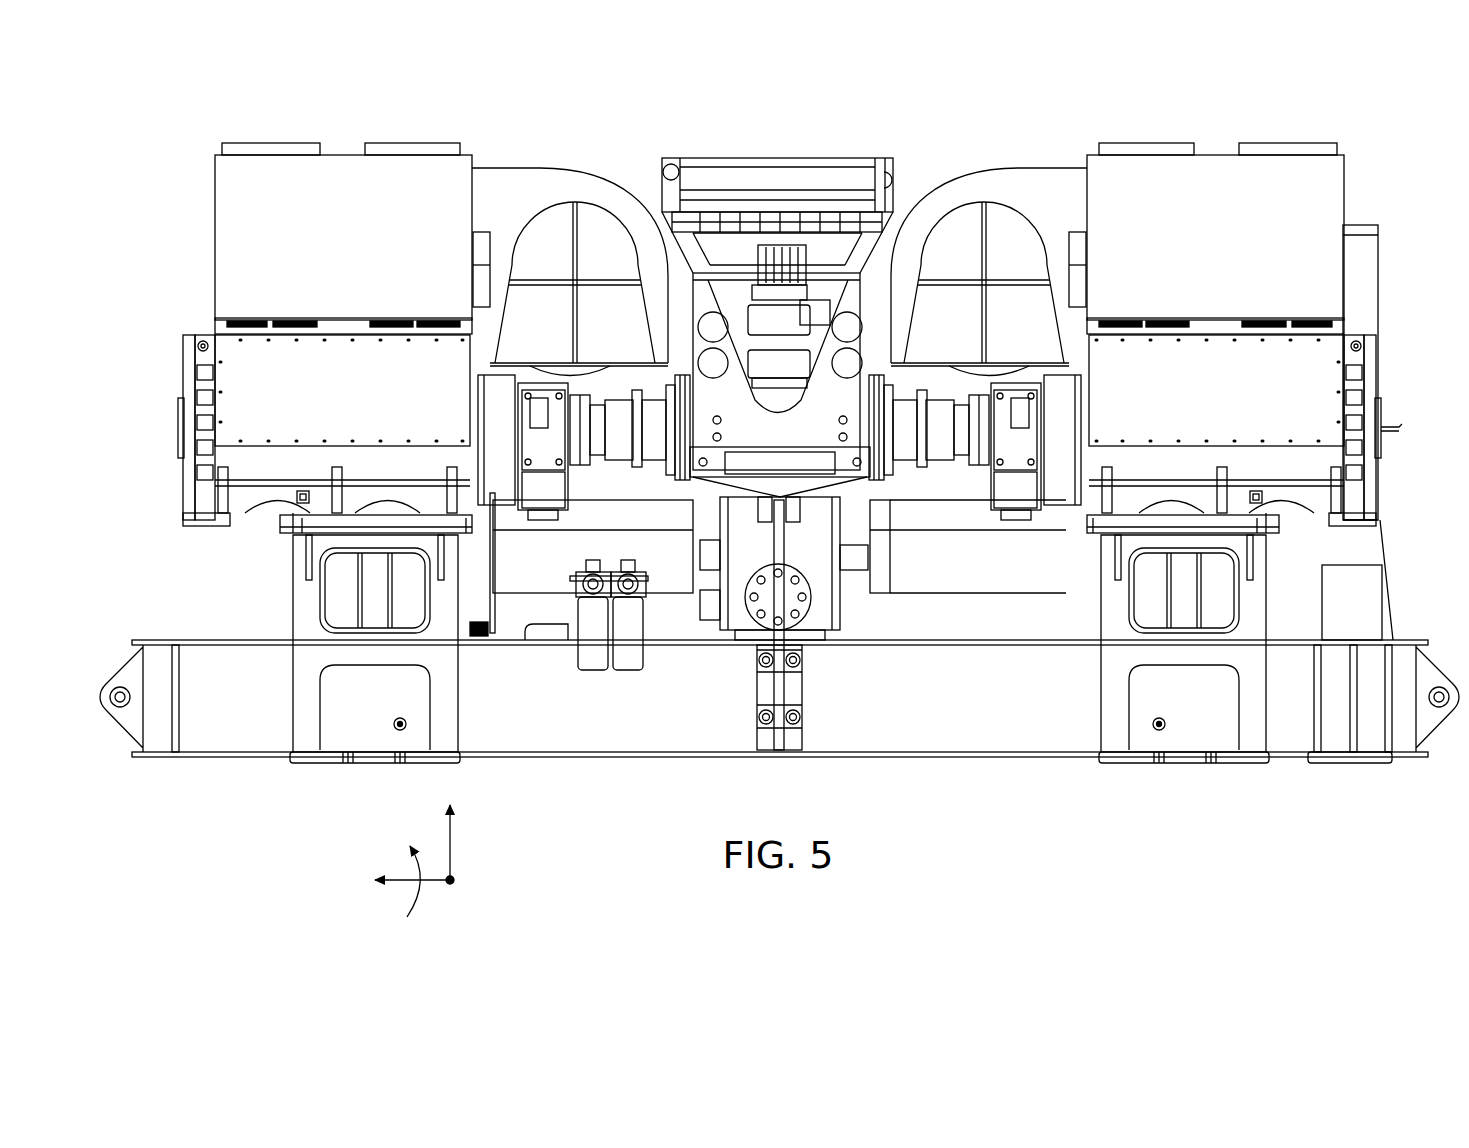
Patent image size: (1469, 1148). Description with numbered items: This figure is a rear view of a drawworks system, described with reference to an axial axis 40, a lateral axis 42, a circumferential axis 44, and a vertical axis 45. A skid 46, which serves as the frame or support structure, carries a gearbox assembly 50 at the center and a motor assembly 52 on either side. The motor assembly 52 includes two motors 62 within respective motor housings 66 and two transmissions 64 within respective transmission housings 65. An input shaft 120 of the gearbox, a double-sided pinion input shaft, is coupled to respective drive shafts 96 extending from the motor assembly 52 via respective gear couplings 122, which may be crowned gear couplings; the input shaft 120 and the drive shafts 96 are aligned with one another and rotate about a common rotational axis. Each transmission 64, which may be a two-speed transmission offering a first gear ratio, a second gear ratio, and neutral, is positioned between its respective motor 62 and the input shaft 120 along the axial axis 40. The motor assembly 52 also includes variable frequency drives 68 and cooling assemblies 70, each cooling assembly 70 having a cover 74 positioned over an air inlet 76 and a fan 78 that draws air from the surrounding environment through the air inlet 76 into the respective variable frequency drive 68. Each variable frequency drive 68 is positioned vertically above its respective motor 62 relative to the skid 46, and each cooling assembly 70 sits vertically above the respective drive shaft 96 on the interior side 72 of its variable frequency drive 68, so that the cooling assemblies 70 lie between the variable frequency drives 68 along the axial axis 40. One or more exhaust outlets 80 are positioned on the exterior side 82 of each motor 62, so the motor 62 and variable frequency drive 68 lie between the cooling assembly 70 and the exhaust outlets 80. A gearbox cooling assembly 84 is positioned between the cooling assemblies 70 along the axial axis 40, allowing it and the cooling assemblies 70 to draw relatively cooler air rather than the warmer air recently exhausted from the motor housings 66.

The axial axis 40 is at (400, 885).
The lateral axis 42 is at (452, 878).
The circumferential axis 44 is at (418, 898).
The vertical axis 45 is at (452, 845).
The skid 46 is at (232, 760).
The gearbox assembly 50 is at (798, 130).
The motor assembly 52 is at (1442, 252).
The motor 62 is at (163, 480).
The transmission 64 is at (577, 477).
The transmission housing 65 is at (500, 420).
The motor housing 66 is at (285, 460).
The variable frequency drive 68 is at (248, 213).
The cooling assembly 70 is at (555, 160).
The interior side 72 is at (492, 152).
The cover 74 is at (530, 250).
The air inlet 76 is at (604, 374).
The fan 78 is at (600, 192).
The exhaust outlet 80 is at (180, 407).
The exterior side 82 is at (160, 365).
The gearbox cooling assembly 84 is at (768, 172).
The drive shaft 96 is at (612, 428).
The input shaft 120 is at (838, 428).
The gear coupling 122 is at (636, 468).